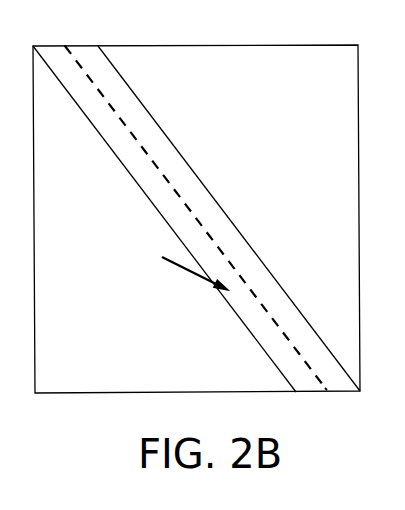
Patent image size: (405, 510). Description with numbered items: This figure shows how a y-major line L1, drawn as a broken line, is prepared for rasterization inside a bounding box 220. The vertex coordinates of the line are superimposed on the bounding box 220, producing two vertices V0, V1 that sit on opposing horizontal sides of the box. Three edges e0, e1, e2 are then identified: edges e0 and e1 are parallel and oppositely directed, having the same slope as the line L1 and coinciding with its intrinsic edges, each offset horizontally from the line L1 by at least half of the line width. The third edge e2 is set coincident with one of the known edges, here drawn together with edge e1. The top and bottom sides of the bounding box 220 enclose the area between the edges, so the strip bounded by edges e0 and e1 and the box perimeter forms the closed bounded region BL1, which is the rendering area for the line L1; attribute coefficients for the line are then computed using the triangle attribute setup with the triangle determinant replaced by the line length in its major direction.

The bounding box 220 is at (293, 45).
The edge e0 is at (100, 137).
The edge e1 is at (229, 218).
The third edge e2 is at (248, 247).
The y-major line L1 is at (172, 187).
The vertex V0 is at (60, 36).
The vertex V1 is at (330, 403).
The bounded region BL1 is at (177, 257).